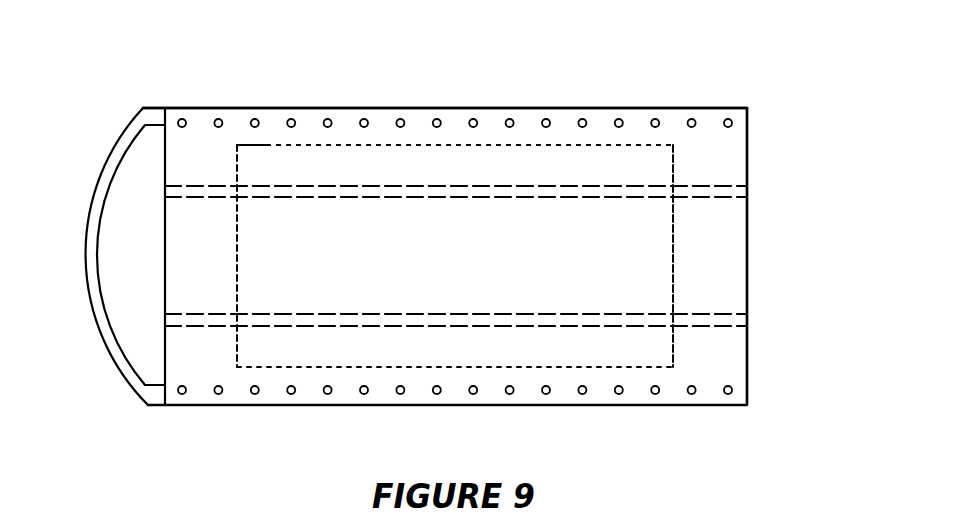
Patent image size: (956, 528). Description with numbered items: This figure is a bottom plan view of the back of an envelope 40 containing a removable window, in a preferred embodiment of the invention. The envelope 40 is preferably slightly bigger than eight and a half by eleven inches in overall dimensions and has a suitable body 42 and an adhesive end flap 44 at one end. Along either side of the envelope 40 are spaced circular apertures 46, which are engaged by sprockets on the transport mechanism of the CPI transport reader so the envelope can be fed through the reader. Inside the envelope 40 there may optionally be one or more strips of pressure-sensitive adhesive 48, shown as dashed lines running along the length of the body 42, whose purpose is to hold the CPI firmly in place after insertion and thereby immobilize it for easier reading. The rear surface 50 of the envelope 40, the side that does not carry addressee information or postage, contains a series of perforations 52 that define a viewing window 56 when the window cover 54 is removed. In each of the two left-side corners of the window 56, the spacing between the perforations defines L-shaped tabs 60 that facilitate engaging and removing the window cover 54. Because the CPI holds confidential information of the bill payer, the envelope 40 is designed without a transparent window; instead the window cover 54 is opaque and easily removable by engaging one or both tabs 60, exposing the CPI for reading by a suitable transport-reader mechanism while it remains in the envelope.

The envelope 40 is at (394, 106).
The body 42 is at (752, 229).
The adhesive end flap 44 is at (135, 201).
The circular apertures 46 is at (585, 119).
The strips of pressure-sensitive adhesive 48 is at (563, 200).
The rear surface 50 is at (720, 297).
The perforations 52 is at (673, 367).
The window cover 54 is at (341, 262).
The viewing window 56 is at (675, 146).
The L-shaped tabs 60 is at (242, 145).